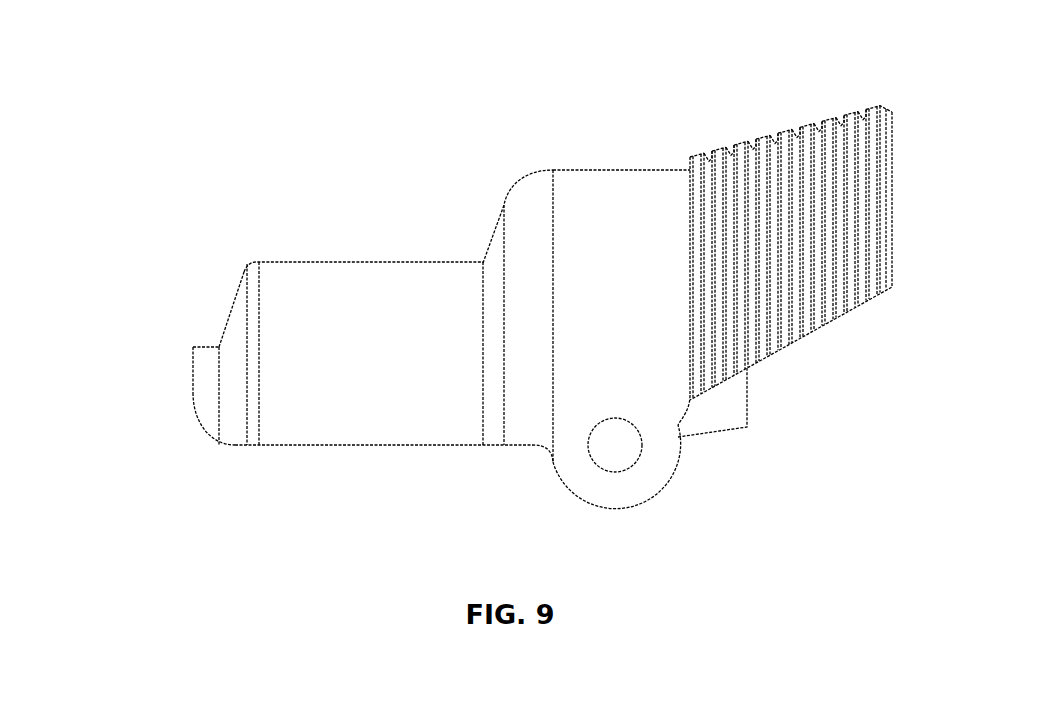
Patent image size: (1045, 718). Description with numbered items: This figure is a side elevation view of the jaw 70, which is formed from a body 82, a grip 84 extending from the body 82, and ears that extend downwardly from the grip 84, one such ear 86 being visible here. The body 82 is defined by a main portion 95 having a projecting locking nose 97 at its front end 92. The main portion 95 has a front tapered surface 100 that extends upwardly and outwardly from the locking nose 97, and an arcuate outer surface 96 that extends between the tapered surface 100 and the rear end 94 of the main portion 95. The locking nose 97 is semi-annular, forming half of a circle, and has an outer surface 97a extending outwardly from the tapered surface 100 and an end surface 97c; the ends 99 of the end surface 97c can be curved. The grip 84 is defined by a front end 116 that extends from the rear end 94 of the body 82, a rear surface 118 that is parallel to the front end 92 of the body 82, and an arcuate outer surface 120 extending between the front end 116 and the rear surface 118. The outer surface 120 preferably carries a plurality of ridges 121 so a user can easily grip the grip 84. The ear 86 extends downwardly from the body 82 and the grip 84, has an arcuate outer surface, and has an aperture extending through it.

The jaw 70 is at (843, 408).
The body 82 is at (380, 420).
The grip 84 is at (787, 140).
The ear 86 is at (680, 462).
The front end 92 is at (218, 390).
The rear end 94 is at (483, 410).
The main portion 95 is at (310, 397).
The outer surface 96 is at (380, 282).
The locking nose 97 is at (200, 372).
The outer surface 97a is at (207, 345).
The end surface 97c is at (193, 383).
The ends 99 is at (202, 430).
The front tapered surface 100 is at (232, 300).
The front end 116 is at (503, 257).
The rear surface 118 is at (892, 185).
The outer surface 120 is at (850, 117).
The ridges 121 is at (735, 153).